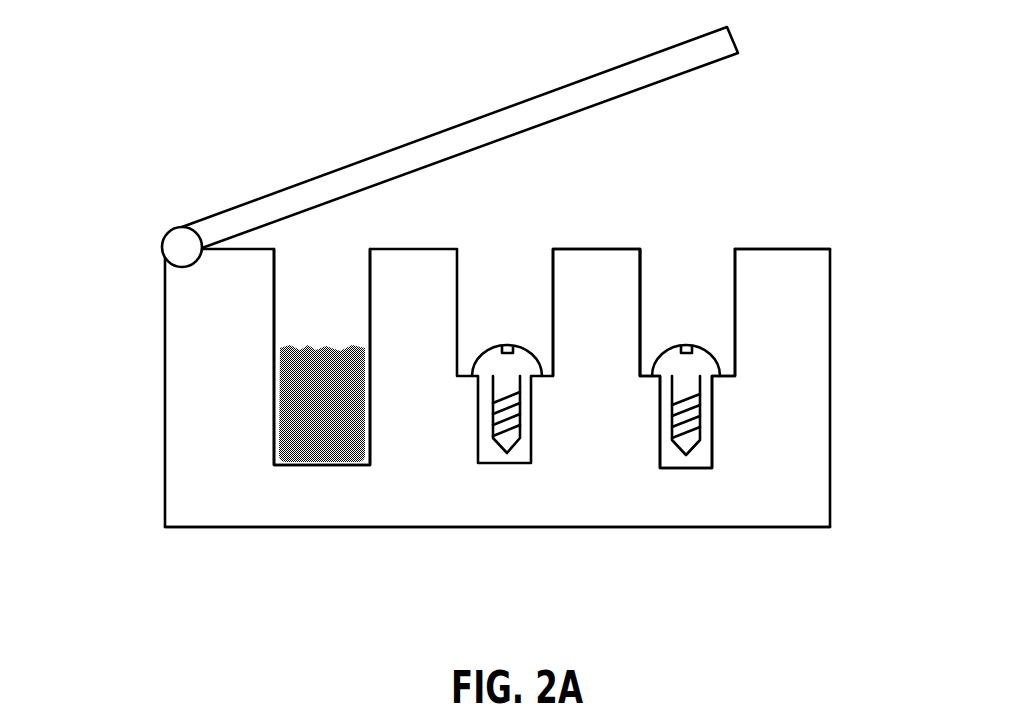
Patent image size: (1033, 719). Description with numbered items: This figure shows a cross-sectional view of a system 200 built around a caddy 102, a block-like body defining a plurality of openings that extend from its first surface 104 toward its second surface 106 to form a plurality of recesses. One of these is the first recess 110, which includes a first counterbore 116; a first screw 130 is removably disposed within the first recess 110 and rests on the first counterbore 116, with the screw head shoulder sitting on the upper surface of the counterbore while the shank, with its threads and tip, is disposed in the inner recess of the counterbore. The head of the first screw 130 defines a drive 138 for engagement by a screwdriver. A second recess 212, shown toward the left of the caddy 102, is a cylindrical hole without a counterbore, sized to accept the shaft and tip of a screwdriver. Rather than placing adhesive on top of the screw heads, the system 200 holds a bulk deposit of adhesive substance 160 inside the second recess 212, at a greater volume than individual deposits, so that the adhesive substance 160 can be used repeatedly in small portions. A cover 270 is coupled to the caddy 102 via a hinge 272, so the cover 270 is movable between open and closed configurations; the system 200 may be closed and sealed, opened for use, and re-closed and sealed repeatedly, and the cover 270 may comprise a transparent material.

The system 200 is at (140, 56).
The caddy 102 is at (165, 362).
The first surface 104 is at (802, 249).
The second surface 106 is at (802, 523).
The first recess 110 is at (718, 245).
The first counterbore 116 is at (639, 420).
The first screw 130 is at (702, 382).
The drive 138 is at (687, 345).
The adhesive substance 160 is at (293, 380).
The second recess 212 is at (309, 279).
The cover 270 is at (503, 108).
The hinge 272 is at (163, 233).